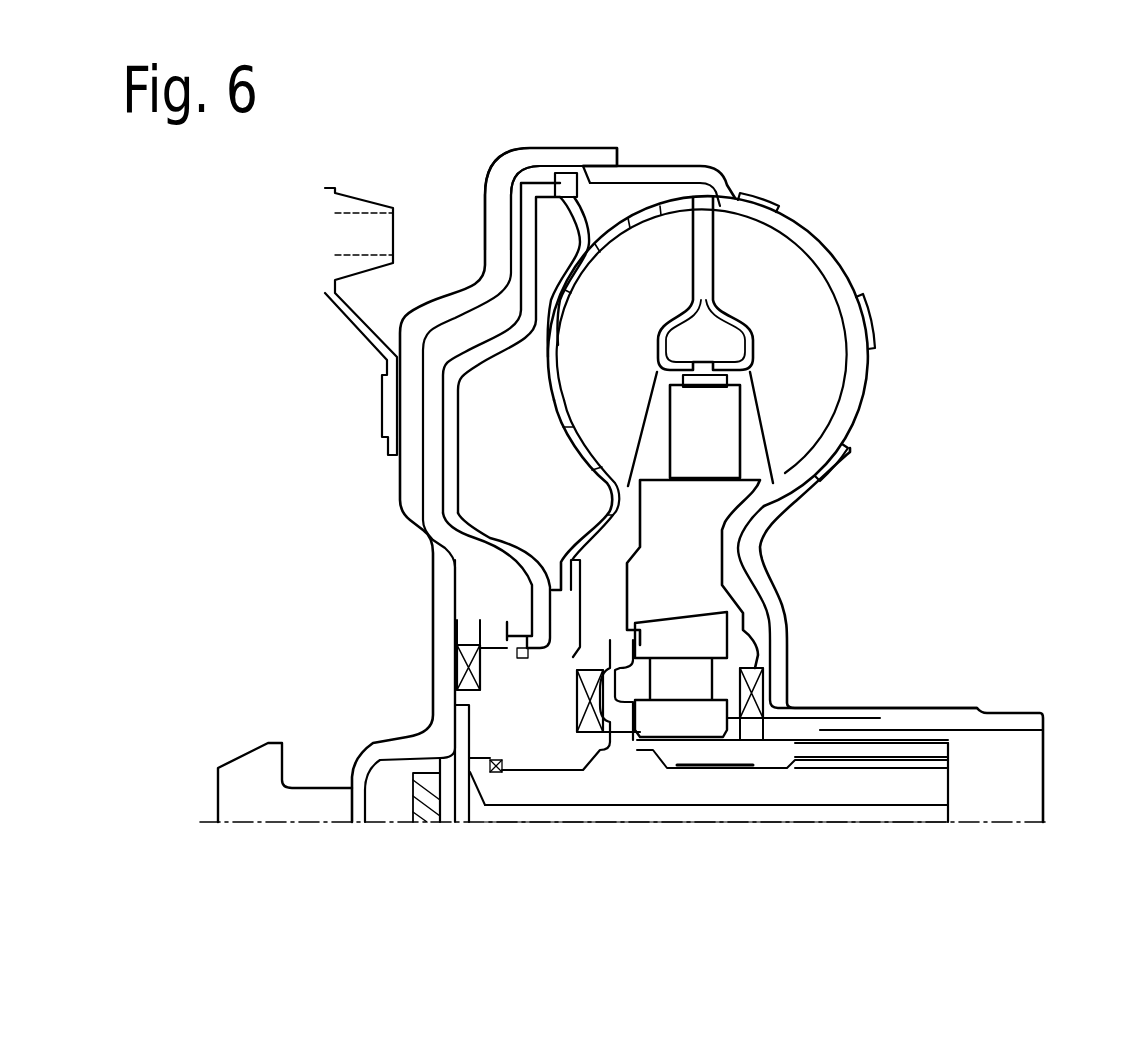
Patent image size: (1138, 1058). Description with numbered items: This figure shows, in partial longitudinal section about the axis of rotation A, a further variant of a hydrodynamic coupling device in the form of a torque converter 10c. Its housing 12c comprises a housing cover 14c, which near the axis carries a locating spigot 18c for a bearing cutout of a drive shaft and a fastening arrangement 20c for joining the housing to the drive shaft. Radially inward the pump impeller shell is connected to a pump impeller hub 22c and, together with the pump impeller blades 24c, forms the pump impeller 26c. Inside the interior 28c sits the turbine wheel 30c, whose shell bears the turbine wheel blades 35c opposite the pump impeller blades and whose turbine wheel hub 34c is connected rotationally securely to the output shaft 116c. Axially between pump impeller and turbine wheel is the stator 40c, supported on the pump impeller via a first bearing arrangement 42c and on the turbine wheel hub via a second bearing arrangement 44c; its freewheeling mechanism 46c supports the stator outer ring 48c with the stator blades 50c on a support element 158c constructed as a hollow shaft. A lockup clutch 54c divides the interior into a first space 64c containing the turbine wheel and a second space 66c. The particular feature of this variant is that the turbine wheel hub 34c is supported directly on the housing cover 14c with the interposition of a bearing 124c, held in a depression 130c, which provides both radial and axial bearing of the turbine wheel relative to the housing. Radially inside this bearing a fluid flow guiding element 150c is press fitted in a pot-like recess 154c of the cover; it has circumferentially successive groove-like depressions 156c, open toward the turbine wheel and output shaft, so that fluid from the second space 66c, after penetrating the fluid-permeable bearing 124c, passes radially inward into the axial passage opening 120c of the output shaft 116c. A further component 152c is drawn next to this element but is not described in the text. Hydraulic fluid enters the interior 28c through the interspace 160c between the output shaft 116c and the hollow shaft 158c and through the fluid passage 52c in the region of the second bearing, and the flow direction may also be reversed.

The hydrodynamic torque converter 10c is at (935, 148).
The housing 12c is at (650, 162).
The housing cover 14c is at (413, 470).
The locating spigot 18c is at (258, 810).
The fastening arrangement 20c is at (325, 293).
The pump impeller hub 22c is at (963, 717).
The pump impeller blades 24c is at (805, 285).
The pump impeller 26c is at (930, 310).
The interior 28c is at (727, 328).
The turbine wheel 30c is at (540, 423).
The turbine wheel hub 34c is at (545, 735).
The turbine wheel blades 35c is at (640, 262).
The stator 40c is at (750, 445).
The first bearing arrangement 42c is at (767, 680).
The second bearing arrangement 44c is at (575, 695).
The freewheeling mechanism 46c is at (737, 638).
The stator outer ring 48c is at (707, 537).
The stator blades 50c is at (722, 452).
The fluid passage 52c is at (625, 707).
The lockup clutch 54c is at (478, 166).
The first space 64c is at (835, 365).
The second space 66c is at (430, 522).
The output shaft 116c is at (765, 795).
The axial passage opening 120c is at (695, 822).
The bearing 124c is at (466, 640).
The depression 130c is at (457, 652).
The fluid flow guiding element 150c is at (456, 798).
The seal 152c is at (413, 776).
The pot-like recess 154c is at (436, 738).
The groove-like depressions 156c is at (455, 792).
The support element 158c is at (898, 750).
The interspace 160c is at (935, 765).
The axis of rotation A is at (920, 824).